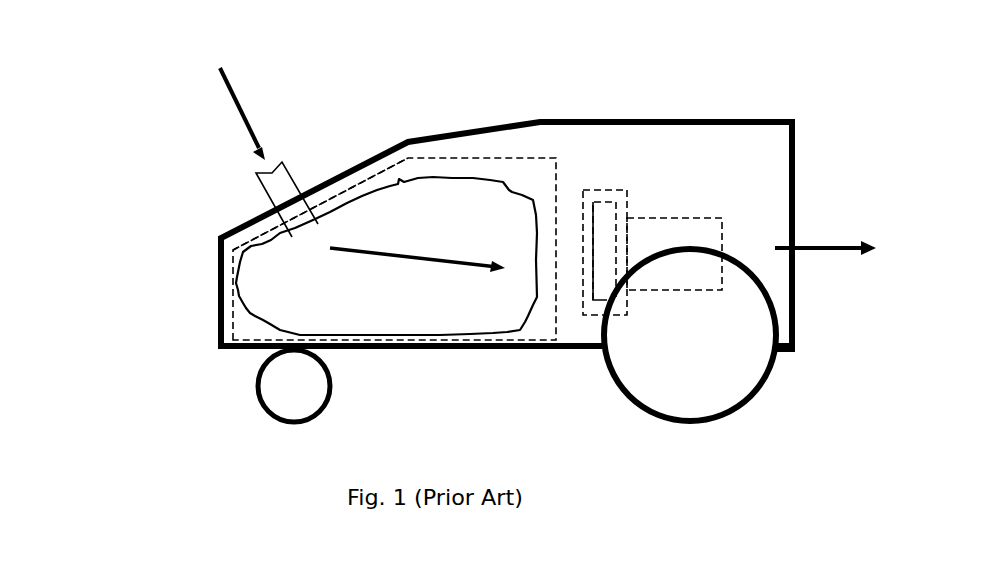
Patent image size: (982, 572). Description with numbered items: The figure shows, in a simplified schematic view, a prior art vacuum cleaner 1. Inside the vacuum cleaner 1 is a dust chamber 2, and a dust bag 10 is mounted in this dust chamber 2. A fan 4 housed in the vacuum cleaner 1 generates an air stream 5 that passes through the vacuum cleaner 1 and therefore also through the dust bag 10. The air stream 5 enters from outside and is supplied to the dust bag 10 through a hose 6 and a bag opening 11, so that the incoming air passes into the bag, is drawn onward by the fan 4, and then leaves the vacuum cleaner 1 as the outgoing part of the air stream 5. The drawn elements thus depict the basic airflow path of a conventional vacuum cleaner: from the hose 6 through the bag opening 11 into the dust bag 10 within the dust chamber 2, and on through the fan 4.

The vacuum cleaner 1 is at (176, 384).
The dust chamber 2 is at (468, 158).
The fan 4 is at (667, 218).
The air stream 5 is at (220, 78).
The hose 6 is at (302, 226).
The dust bag 10 is at (505, 182).
The bag opening 11 is at (300, 228).